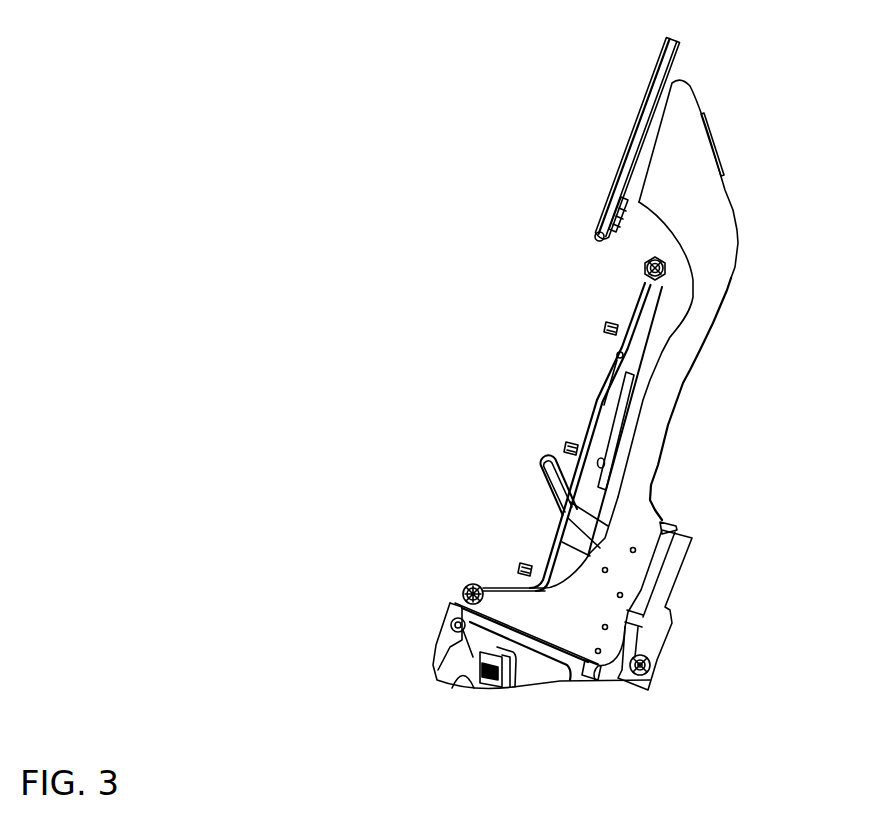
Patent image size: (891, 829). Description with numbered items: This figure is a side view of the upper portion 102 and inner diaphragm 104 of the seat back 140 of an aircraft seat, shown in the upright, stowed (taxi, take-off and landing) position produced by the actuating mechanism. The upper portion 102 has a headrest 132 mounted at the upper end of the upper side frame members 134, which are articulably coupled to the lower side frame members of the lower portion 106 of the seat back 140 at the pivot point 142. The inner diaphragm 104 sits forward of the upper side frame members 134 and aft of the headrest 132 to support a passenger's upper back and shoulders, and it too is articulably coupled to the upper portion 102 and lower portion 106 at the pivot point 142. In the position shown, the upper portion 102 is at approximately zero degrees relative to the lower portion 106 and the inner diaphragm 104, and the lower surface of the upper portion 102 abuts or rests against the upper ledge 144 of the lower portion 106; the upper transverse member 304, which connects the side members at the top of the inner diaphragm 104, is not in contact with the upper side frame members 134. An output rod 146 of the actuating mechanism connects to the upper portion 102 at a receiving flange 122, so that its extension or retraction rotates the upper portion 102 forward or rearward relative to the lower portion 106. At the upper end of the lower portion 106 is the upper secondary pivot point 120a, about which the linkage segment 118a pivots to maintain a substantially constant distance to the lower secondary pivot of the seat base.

The seat back 140 is at (777, 86).
The upper portion 102 is at (725, 208).
The upper side frame members 134 is at (676, 381).
The headrest 132 is at (647, 120).
The upper transverse member 304 is at (642, 264).
The inner diaphragm 104 is at (613, 420).
The upper ledge 144 is at (562, 673).
The pivot point 142 is at (465, 587).
The upper secondary pivot point 120a is at (452, 626).
The linkage segment 118a is at (457, 662).
The lower portion 106 is at (517, 675).
The receiving flange 122 is at (661, 654).
The rod 146 is at (650, 680).